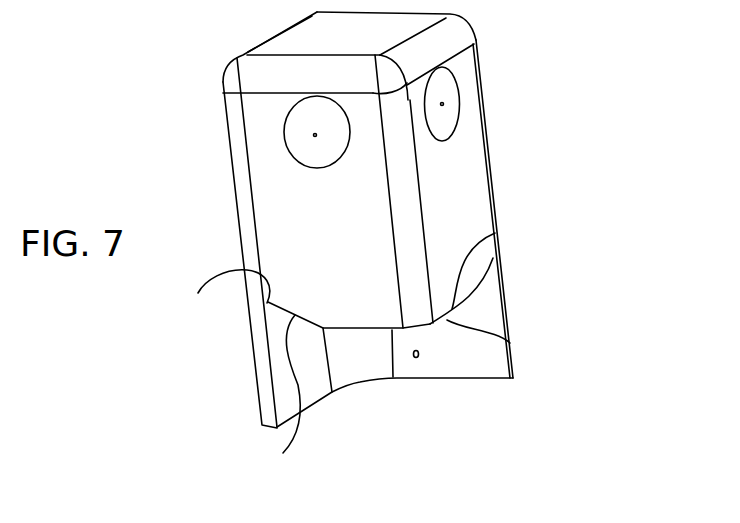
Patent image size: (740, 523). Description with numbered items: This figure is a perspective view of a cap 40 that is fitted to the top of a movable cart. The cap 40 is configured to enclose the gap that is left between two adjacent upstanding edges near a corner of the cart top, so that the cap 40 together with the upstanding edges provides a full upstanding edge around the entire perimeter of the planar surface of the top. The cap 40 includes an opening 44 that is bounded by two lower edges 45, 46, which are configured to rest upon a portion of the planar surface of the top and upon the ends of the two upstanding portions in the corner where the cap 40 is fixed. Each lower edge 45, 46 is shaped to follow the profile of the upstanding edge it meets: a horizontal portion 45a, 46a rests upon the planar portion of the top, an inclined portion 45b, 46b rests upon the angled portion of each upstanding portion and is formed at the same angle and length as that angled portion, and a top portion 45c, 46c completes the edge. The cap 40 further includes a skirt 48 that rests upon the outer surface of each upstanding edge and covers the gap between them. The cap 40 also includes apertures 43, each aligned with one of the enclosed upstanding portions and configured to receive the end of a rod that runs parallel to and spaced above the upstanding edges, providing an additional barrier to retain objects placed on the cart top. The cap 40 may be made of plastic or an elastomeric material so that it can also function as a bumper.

The cap 40 is at (470, 183).
The aperture 43 is at (315, 135).
The opening 44 is at (417, 360).
The lower edge 45 is at (320, 327).
The horizontal portion 45a is at (380, 330).
The inclined portion 45b is at (270, 400).
The top portion 45c is at (205, 296).
The lower edge 46 is at (495, 233).
The horizontal portion 46a is at (517, 380).
The inclined portion 46b is at (480, 287).
The top portion 46c is at (493, 255).
The skirt 48 is at (280, 377).